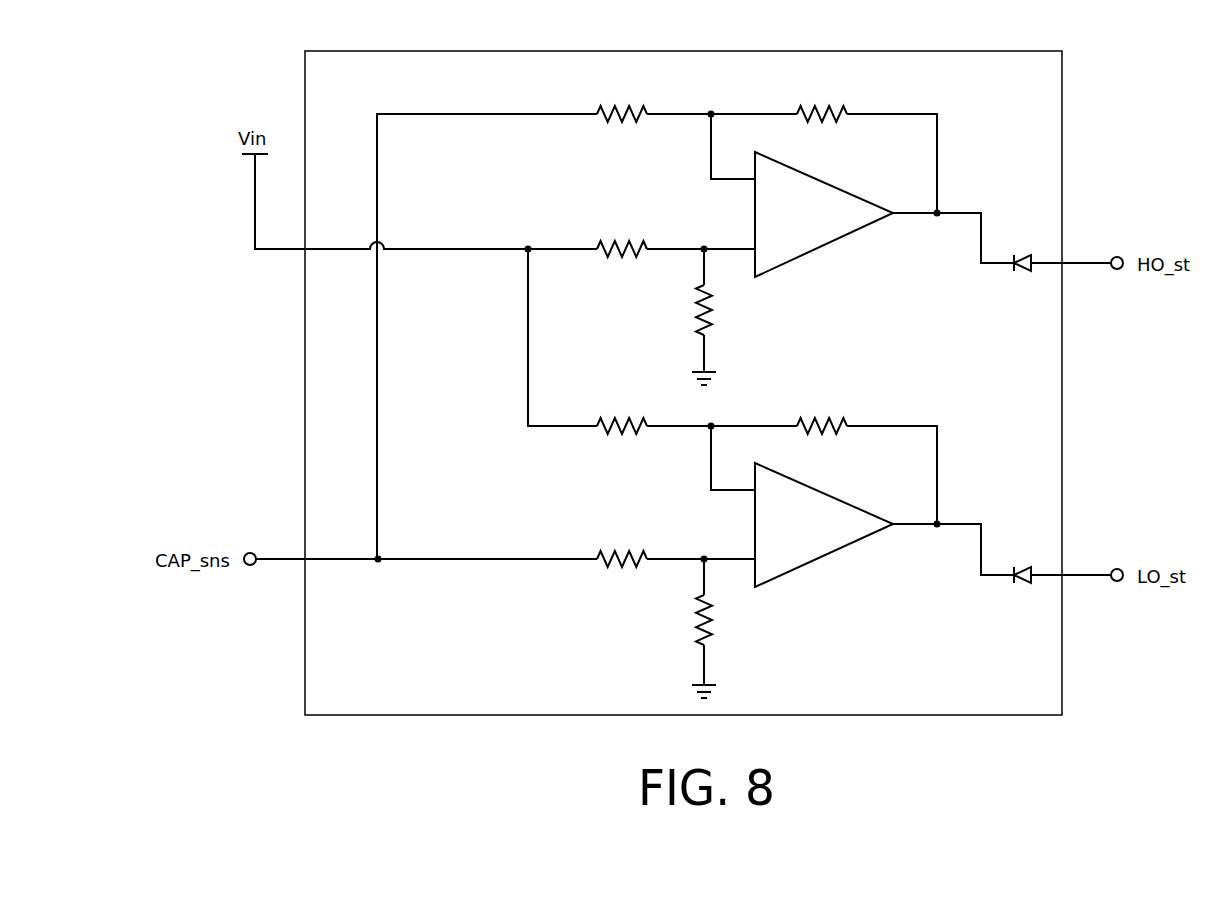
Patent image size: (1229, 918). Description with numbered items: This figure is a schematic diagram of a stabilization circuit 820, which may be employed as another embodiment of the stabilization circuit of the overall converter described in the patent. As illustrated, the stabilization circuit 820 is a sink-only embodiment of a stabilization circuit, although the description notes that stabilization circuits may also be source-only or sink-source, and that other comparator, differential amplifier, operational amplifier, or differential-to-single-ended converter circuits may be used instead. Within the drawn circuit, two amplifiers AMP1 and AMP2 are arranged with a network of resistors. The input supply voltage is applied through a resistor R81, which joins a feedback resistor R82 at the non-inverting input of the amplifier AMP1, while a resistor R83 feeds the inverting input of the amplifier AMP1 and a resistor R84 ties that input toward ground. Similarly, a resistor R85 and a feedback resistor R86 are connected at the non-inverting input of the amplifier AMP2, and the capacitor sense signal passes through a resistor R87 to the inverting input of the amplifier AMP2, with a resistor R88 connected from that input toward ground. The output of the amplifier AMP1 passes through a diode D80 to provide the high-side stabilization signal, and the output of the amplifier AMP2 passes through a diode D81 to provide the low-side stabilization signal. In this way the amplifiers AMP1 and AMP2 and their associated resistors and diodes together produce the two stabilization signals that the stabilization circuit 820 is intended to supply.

The stabilization circuit 820 is at (790, 50).
The resistor R81 is at (654, 101).
The resistor R82 is at (867, 146).
The resistor R83 is at (676, 236).
The resistor R84 is at (722, 317).
The resistor R85 is at (654, 413).
The resistor R86 is at (867, 458).
The resistor R87 is at (676, 546).
The resistor R88 is at (722, 628).
The diode D80 is at (1057, 250).
The diode D81 is at (1057, 562).
The amplifier AMP1 is at (884, 214).
The amplifier AMP2 is at (884, 525).